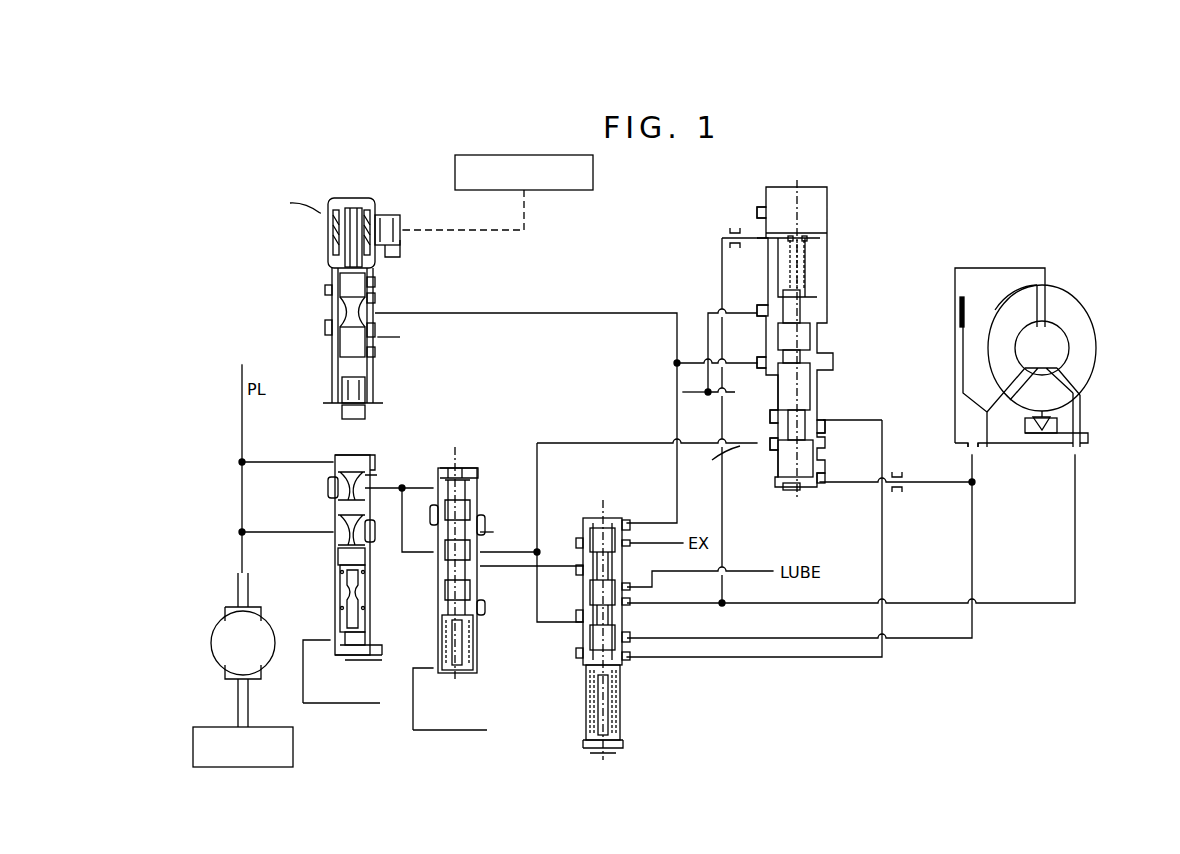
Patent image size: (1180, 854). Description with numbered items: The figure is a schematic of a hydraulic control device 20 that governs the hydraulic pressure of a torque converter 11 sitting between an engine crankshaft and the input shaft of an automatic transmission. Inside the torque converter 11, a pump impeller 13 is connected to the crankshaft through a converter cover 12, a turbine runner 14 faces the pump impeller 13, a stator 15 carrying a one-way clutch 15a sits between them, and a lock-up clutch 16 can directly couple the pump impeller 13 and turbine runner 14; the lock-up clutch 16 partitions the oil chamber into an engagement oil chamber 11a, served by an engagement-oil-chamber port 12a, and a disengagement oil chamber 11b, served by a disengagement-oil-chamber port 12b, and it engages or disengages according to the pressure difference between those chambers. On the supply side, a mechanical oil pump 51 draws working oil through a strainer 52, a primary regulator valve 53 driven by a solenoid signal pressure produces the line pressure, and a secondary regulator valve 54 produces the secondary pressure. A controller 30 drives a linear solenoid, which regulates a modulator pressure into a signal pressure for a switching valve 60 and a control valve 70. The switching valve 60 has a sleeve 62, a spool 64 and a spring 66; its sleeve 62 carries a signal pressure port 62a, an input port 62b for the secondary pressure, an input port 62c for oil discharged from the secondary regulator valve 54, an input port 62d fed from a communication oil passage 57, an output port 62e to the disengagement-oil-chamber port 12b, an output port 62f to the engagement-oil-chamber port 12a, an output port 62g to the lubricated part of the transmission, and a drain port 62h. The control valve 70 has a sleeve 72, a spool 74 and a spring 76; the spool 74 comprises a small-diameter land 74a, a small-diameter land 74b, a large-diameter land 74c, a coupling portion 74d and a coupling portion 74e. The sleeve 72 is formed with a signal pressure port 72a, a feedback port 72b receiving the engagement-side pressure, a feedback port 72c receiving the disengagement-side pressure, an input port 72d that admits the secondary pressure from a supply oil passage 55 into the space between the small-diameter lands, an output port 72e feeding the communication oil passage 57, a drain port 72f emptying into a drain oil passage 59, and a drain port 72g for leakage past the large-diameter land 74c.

The torque converter 11 is at (1032, 360).
The engagement oil chamber 11a is at (1046, 350).
The disengagement oil chamber 11b is at (972, 414).
The converter cover 12 is at (955, 283).
The engagement-oil-chamber port 12a is at (1085, 452).
The disengagement-oil-chamber port 12b is at (968, 447).
The pump impeller 13 is at (1082, 297).
The turbine runner 14 is at (1014, 292).
The stator 15 is at (1072, 382).
The one-way clutch 15a is at (1030, 437).
The lock-up clutch 16 is at (958, 320).
The hydraulic control device 20 is at (244, 176).
The controller 30 is at (594, 172).
The mechanical oil pump 51 is at (223, 622).
The strainer 52 is at (228, 727).
The primary regulator valve 53 is at (380, 464).
The secondary regulator valve 54 is at (473, 470).
The supply oil passage 55 is at (610, 442).
The communication oil passage 57 is at (800, 659).
The drain oil passage 59 is at (730, 387).
The switching valve 60 is at (636, 617).
The sleeve 62 is at (612, 752).
The signal pressure port 62a is at (630, 524).
The input port 62b is at (580, 620).
The input port 62c is at (580, 565).
The input port 62d is at (630, 658).
The output port 62e is at (630, 638).
The output port 62f is at (630, 600).
The output port 62g is at (630, 587).
The drain port 62h is at (632, 541).
The spool 64 is at (636, 582).
The spring 66 is at (622, 702).
The control valve 70 is at (813, 338).
The sleeve 72 is at (800, 358).
The signal pressure port 72a is at (757, 363).
The feedback port 72b is at (757, 239).
The feedback port 72c is at (822, 485).
The input port 72d is at (768, 457).
The output port 72e is at (826, 425).
The drain port 72f is at (762, 393).
The drain port 72g is at (757, 310).
The spool 74 is at (853, 390).
The small-diameter land 74a is at (822, 457).
The small-diameter land 74b is at (812, 380).
The large-diameter land 74c is at (810, 340).
The coupling portion 74d is at (818, 407).
The coupling portion 74e is at (831, 366).
The spring 76 is at (820, 238).